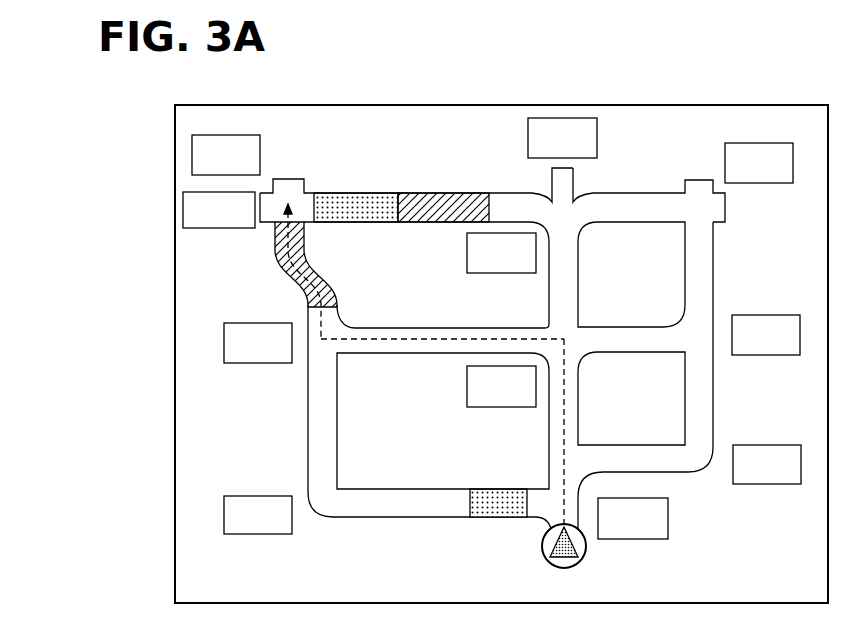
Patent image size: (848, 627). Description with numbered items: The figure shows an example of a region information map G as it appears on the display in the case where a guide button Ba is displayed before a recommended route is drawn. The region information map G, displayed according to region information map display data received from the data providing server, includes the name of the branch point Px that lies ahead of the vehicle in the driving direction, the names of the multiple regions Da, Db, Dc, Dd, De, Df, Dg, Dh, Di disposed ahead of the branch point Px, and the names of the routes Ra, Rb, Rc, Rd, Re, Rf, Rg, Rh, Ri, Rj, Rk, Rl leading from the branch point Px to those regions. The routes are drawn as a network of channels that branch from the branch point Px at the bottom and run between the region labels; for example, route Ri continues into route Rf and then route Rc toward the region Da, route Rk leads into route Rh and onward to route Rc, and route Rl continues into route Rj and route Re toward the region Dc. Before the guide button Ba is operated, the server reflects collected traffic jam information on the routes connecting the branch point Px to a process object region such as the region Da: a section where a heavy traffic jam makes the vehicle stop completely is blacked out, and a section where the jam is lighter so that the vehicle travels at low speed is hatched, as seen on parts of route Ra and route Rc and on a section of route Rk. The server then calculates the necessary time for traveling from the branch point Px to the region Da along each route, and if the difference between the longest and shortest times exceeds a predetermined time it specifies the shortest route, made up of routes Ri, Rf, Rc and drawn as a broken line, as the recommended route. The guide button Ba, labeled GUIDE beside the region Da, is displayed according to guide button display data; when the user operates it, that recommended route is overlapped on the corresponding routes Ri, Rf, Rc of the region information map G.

The region information map G is at (673, 103).
The guide button Ba is at (183, 212).
The region Da is at (226, 155).
The region Db is at (562, 138).
The region Dc is at (759, 163).
The region Dd is at (258, 343).
The region De is at (501, 253).
The region Df is at (766, 335).
The region Dg is at (258, 515).
The region Dh is at (501, 386).
The region Di is at (767, 464).
The route Ra is at (416, 194).
The route Rb is at (649, 193).
The route Rc is at (286, 275).
The route Rd is at (631, 254).
The route Re is at (732, 334).
The route Rf is at (434, 280).
The route Rg is at (631, 301).
The route Rh is at (407, 417).
The route Ri is at (631, 379).
The route Rj is at (654, 434).
The route Rk is at (443, 435).
The route Rl is at (631, 422).
The branch point Px is at (605, 533).